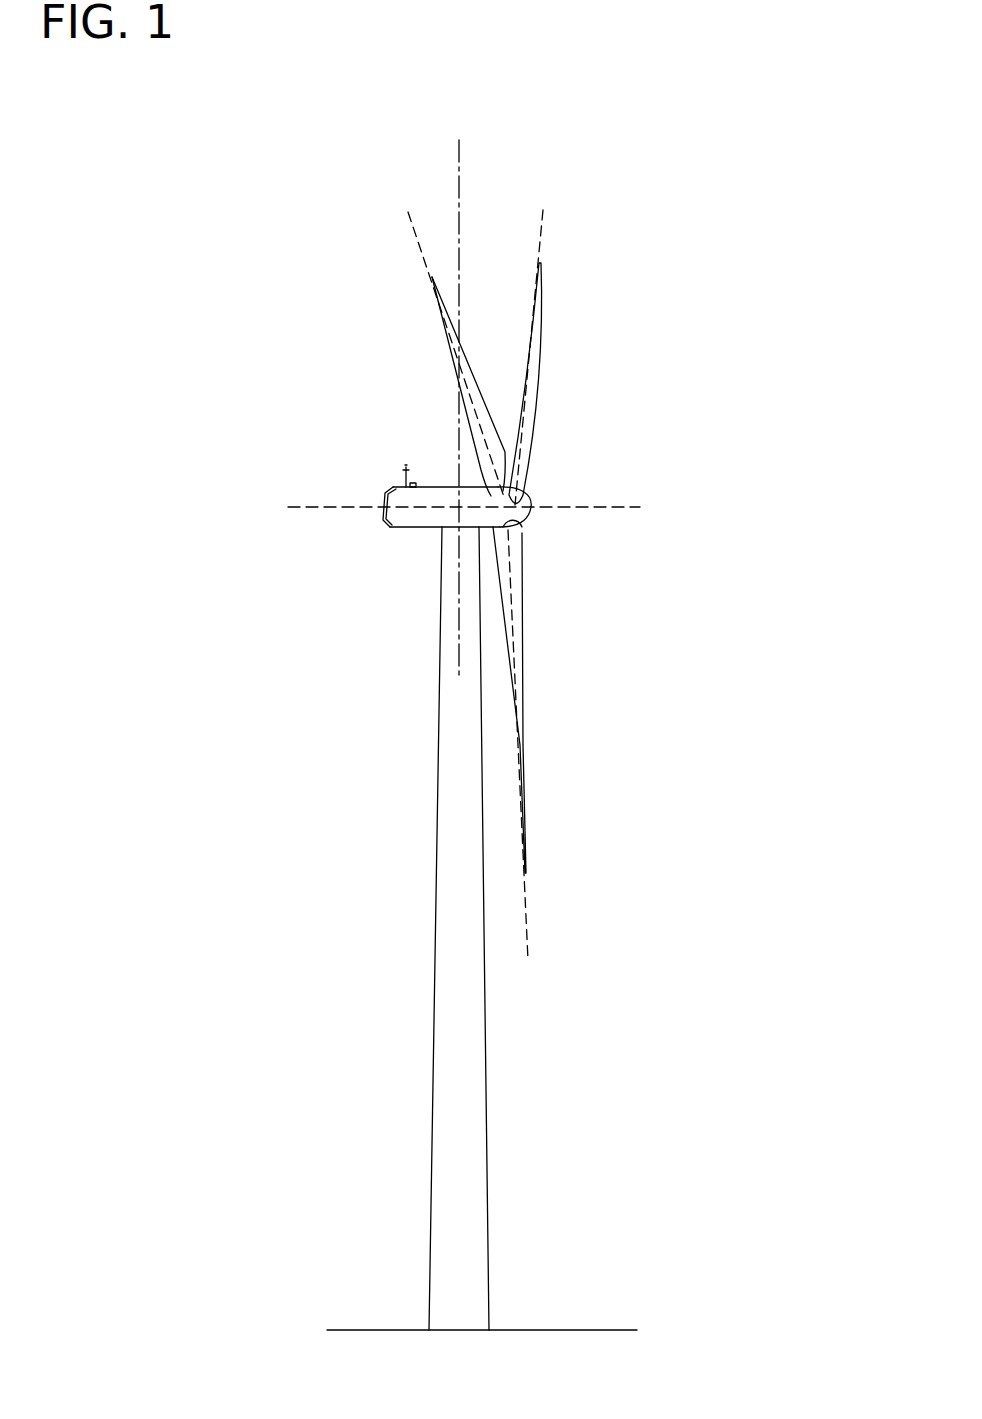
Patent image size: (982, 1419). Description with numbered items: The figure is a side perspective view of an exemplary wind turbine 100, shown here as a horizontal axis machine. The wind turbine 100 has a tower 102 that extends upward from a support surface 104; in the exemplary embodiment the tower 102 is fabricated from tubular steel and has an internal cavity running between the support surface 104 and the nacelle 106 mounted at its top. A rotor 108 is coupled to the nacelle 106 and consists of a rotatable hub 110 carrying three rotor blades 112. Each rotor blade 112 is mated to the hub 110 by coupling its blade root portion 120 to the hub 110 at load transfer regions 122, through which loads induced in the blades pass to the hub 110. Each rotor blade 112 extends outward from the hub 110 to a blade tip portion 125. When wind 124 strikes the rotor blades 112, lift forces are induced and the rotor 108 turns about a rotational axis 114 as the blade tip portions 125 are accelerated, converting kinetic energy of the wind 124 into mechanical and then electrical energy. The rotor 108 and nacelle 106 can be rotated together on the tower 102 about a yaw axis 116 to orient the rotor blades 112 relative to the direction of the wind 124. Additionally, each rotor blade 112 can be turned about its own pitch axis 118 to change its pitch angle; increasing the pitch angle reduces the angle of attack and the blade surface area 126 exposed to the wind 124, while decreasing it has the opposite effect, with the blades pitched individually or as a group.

The wind turbine 100 is at (203, 276).
The tower 102 is at (433, 1092).
The support surface 104 is at (385, 1330).
The nacelle 106 is at (412, 528).
The rotor 108 is at (524, 579).
The rotatable hub 110 is at (531, 497).
The rotor blades 112 is at (452, 350).
The rotational axis 114 is at (605, 510).
The yaw axis 116 is at (459, 172).
The pitch axis 118 is at (410, 231).
The blade root portion 120 is at (517, 590).
The load transfer regions 122 is at (520, 530).
The wind 124 is at (790, 507).
The blade tip portion 125 is at (434, 297).
The blade surface area 126 is at (531, 460).